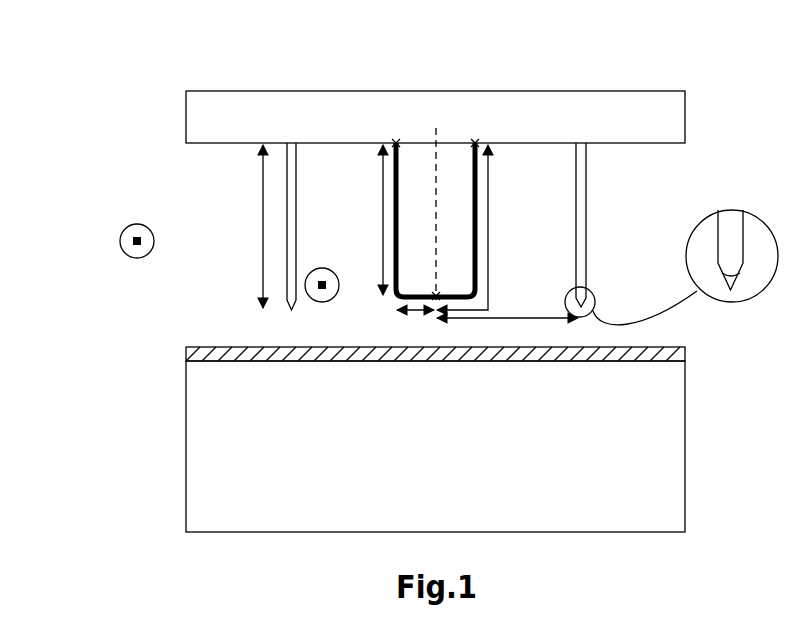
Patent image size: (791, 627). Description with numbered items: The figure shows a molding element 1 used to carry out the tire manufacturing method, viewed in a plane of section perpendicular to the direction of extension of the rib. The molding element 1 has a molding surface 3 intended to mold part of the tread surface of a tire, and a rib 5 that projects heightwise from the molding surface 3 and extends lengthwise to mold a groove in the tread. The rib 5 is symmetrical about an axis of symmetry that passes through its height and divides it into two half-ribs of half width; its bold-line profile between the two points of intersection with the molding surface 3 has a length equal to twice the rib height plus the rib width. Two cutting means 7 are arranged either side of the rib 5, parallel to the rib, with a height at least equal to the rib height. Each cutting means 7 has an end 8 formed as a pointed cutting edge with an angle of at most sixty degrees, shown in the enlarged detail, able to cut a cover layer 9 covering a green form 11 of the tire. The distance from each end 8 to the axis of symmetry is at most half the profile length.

The molding element 1 is at (153, 116).
The molding surface 3 is at (648, 152).
The rib 5 is at (461, 228).
The cutting means 7 is at (585, 268).
The end 8 is at (749, 262).
The cover layer 9 is at (676, 357).
The green form 11 is at (697, 363).